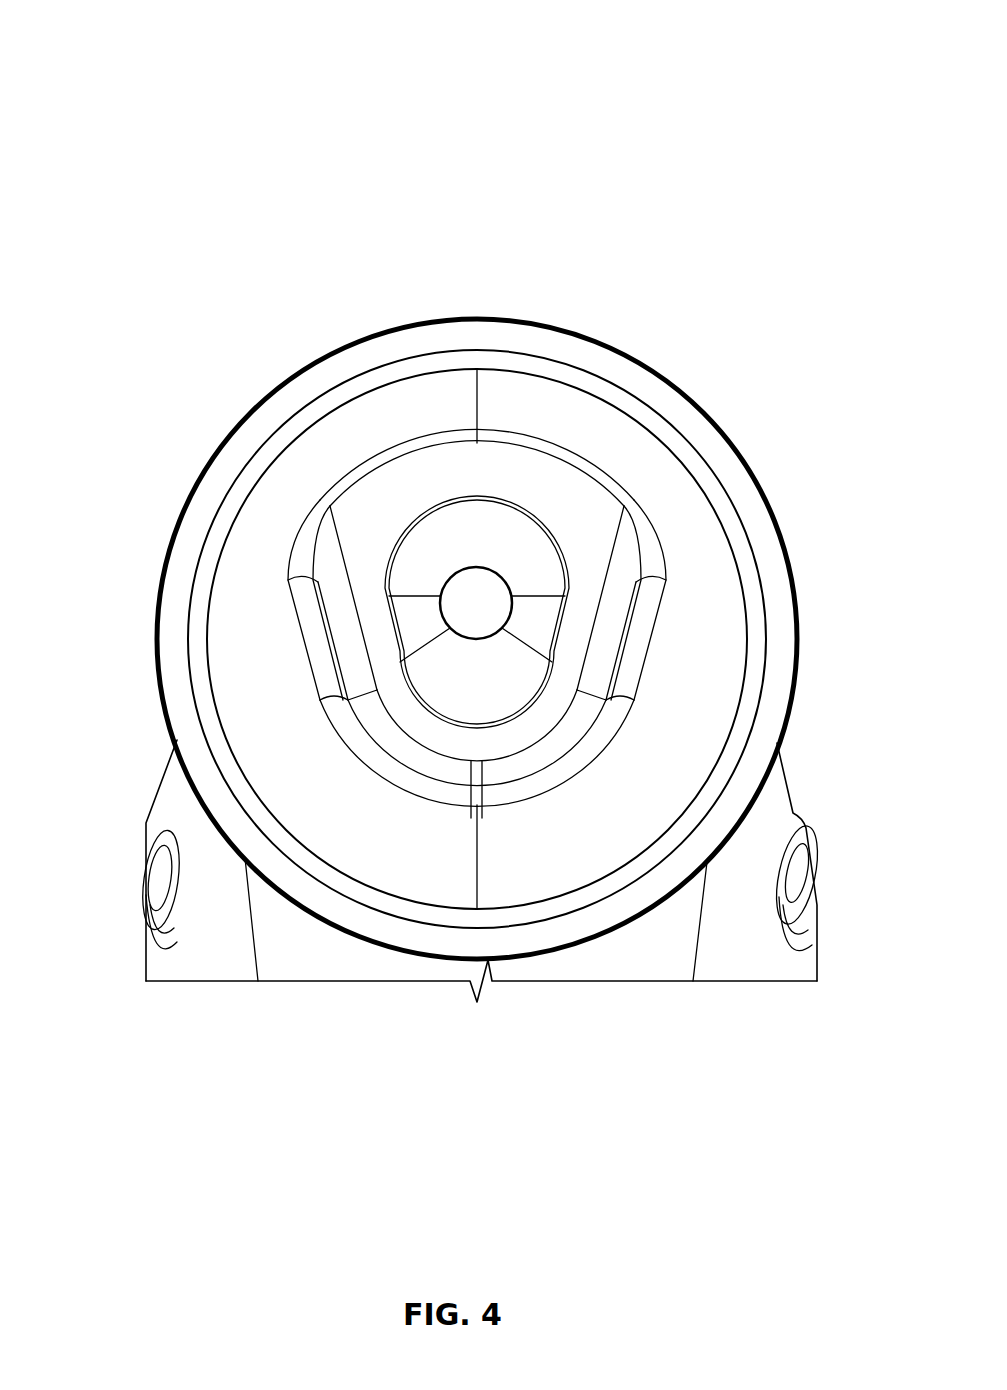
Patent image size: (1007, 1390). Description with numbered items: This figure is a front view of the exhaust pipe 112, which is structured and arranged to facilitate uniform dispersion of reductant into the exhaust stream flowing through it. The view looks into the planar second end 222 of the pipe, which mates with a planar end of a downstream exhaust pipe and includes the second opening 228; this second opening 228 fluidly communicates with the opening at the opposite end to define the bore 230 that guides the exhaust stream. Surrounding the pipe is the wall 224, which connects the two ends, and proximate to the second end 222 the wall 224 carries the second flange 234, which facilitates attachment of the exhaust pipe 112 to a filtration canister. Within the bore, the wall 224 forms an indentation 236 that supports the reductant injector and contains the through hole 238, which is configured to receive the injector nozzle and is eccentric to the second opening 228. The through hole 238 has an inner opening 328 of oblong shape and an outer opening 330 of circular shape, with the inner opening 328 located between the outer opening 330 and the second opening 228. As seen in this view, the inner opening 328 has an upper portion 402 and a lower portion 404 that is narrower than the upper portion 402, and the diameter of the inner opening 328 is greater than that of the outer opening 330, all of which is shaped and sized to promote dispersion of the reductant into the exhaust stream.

The exhaust pipe 112 is at (127, 41).
The second end 222 is at (733, 478).
The wall 224 is at (180, 783).
The second opening 228 is at (642, 852).
The bore 230 is at (693, 722).
The second flange 234 is at (787, 572).
The indentation 236 is at (357, 630).
The through hole 238 is at (497, 614).
The inner opening 328 is at (427, 713).
The outer opening 330 is at (503, 578).
The upper portion 402 is at (423, 517).
The lower portion 404 is at (497, 728).